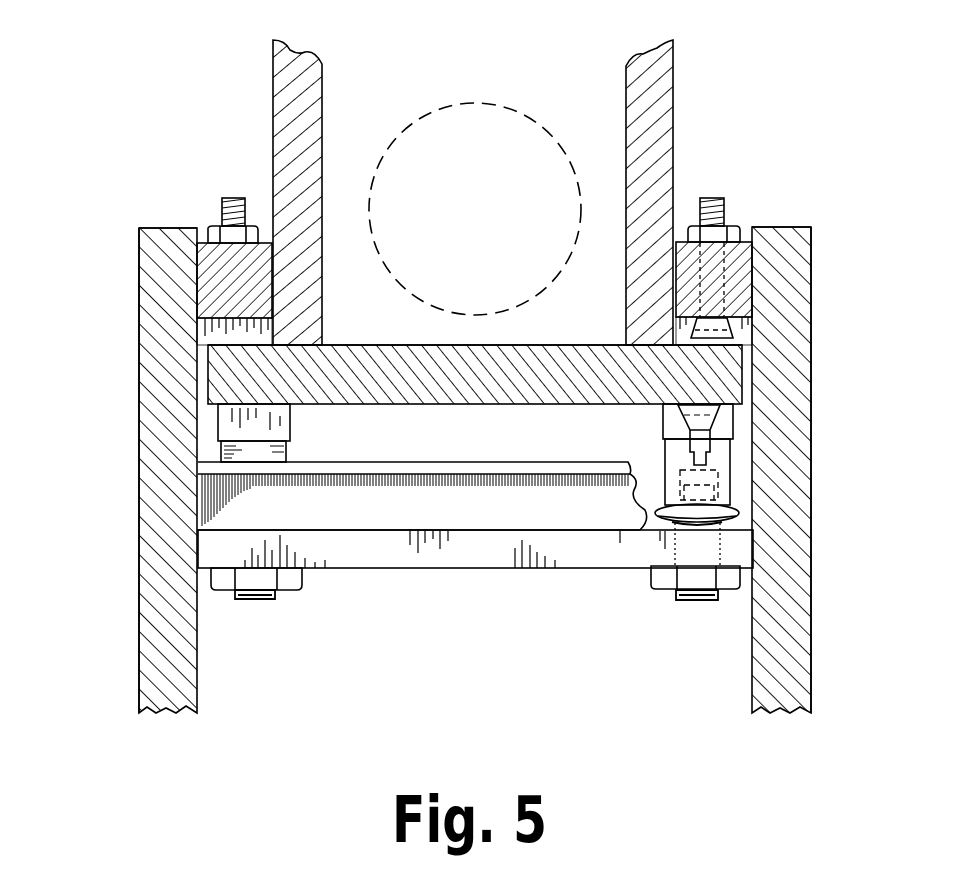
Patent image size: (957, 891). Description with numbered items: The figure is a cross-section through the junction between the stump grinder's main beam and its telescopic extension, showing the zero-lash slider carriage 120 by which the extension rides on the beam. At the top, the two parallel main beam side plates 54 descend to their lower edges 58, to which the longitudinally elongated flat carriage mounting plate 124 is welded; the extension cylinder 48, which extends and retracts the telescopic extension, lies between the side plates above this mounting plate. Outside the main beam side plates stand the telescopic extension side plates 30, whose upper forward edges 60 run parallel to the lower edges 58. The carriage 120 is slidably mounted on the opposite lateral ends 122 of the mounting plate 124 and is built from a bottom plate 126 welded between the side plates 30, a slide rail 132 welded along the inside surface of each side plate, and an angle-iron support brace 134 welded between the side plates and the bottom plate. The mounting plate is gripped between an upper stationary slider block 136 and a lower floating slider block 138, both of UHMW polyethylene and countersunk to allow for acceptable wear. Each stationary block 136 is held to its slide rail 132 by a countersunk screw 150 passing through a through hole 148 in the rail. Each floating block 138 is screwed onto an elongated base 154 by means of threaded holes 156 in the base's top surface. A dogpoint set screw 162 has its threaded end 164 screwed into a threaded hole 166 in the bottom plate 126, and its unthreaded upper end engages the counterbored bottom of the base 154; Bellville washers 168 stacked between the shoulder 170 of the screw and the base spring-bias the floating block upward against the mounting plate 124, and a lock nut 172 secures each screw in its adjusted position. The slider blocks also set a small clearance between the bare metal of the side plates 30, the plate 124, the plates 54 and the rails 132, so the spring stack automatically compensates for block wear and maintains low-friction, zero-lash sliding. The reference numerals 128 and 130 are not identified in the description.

The telescopic extension side plate 30 is at (116, 210).
The extension cylinder 48 is at (508, 103).
The main beam side plate 54 is at (320, 103).
The lower edge of side plate 58 is at (360, 345).
The upper forward edge 60 is at (167, 212).
The slider carriage 120 is at (100, 572).
The lateral ends of flat plate 122 is at (215, 377).
The carriage mounting plate 124 is at (475, 345).
The bottom plate 126 is at (428, 570).
The outer surface of side wall 128 is at (139, 262).
The outer surface of side wall 130 is at (810, 263).
The slide rail 132 is at (205, 303).
The support brace 134 is at (400, 462).
The upper slider block 136 is at (210, 327).
The lower slider block 138 is at (225, 416).
The through hole 148 is at (700, 290).
The countersunk screw 150 is at (234, 188).
The elongated base 154 is at (225, 452).
The threaded hole 156 is at (688, 460).
The dogpoint set screw 162 is at (254, 624).
The threaded end 164 is at (280, 597).
The threaded hole 166 is at (740, 546).
The Bellville washer 168 is at (670, 518).
The shoulder 170 is at (672, 527).
The lock nut 172 is at (218, 592).